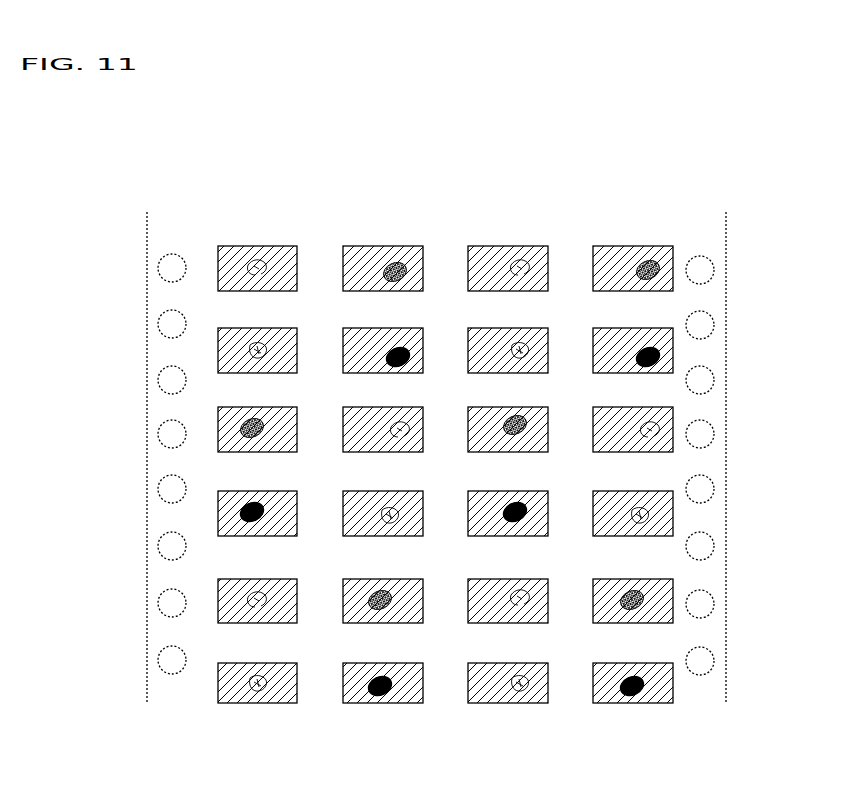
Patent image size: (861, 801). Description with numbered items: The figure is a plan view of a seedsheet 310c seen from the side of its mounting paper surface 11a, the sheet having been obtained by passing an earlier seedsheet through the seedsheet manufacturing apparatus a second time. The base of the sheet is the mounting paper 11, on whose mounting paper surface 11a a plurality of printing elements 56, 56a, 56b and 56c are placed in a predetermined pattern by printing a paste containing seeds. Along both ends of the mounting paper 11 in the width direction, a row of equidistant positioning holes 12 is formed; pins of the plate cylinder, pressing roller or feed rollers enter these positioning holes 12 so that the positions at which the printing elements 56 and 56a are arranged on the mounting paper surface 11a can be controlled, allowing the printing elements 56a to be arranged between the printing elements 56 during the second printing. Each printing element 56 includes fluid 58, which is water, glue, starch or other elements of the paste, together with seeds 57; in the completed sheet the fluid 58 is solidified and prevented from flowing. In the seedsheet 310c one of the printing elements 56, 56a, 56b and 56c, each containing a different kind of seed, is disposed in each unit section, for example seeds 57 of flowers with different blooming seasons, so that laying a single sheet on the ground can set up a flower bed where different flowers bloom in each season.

The seedsheet 310c is at (123, 197).
The mounting paper 11 is at (195, 498).
The mounting paper surface 11a is at (200, 560).
The positioning holes 12 is at (160, 268).
The printing elements 56 is at (397, 267).
The printing elements 56a is at (297, 341).
The printing elements 56b is at (400, 350).
The printing elements 56c is at (297, 262).
The seeds 57 is at (254, 266).
The fluid 58 is at (215, 424).